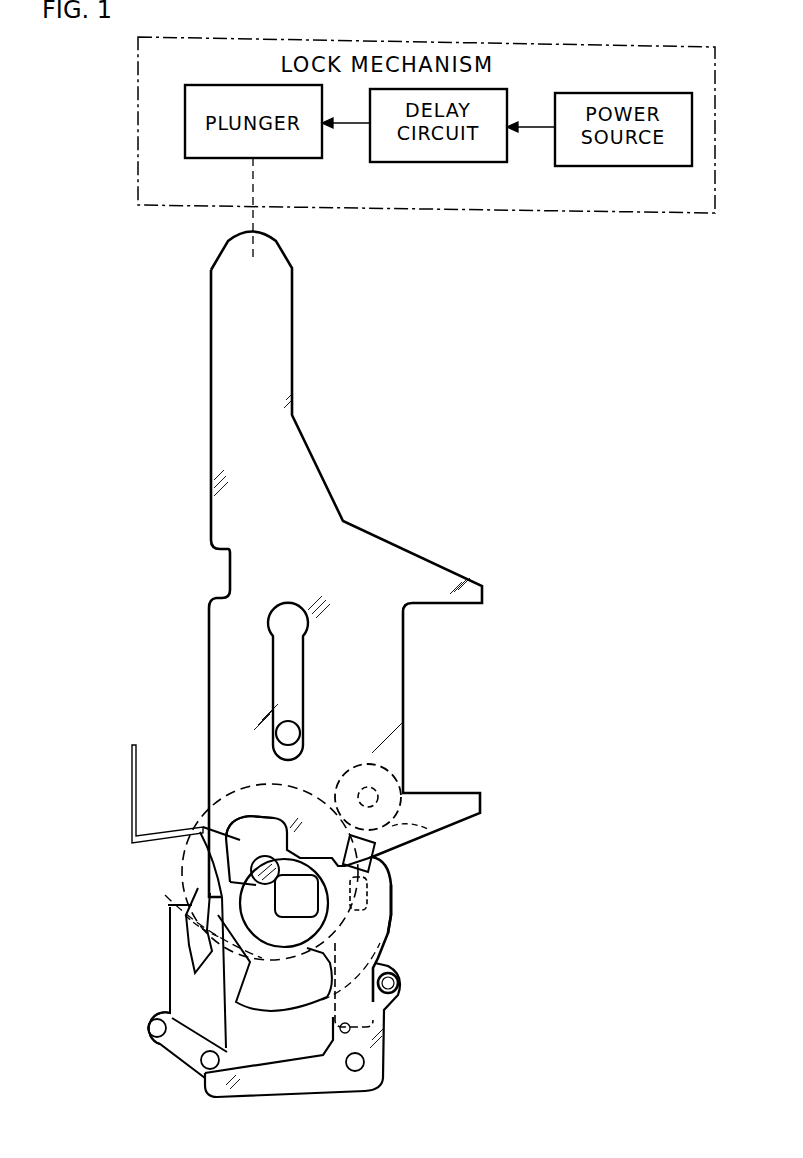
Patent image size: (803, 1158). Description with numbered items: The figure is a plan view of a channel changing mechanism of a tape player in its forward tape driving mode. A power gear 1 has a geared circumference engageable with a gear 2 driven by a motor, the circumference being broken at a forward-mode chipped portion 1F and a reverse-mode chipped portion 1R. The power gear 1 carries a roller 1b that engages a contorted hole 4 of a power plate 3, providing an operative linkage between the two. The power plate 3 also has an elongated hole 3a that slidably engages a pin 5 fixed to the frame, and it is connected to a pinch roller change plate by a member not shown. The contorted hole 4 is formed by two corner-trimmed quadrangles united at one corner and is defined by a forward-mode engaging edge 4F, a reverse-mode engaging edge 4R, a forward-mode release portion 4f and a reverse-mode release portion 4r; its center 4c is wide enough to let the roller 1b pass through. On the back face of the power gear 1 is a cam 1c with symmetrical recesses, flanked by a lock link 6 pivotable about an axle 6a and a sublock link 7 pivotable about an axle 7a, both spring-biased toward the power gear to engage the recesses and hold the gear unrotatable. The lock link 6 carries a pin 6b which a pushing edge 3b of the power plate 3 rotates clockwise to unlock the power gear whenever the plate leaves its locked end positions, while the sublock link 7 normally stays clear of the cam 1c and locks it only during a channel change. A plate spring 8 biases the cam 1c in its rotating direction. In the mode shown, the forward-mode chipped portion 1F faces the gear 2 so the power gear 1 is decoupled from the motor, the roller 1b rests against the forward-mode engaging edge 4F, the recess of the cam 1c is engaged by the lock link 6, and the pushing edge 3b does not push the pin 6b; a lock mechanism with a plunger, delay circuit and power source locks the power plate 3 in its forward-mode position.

The power gear 1 is at (190, 878).
The roller 1b is at (203, 830).
The cam 1c is at (360, 916).
The forward-mode chipped portion 1F is at (392, 826).
The reverse-mode chipped portion 1R is at (237, 973).
The gear 2 is at (378, 770).
The power plate 3 is at (301, 460).
The elongated hole 3a is at (296, 669).
The pushing edge 3b is at (386, 935).
The contorted hole 4 is at (410, 852).
The center 4c is at (352, 867).
The forward-mode release portion 4f is at (258, 818).
The forward-mode engaging edge 4F is at (210, 890).
The reverse-mode engaging edge 4R is at (305, 857).
The reverse-mode release portion 4r is at (376, 950).
The pin 5 is at (300, 740).
The lock link 6 is at (318, 1074).
The axle 6a is at (366, 1065).
The pin 6b is at (399, 982).
The sublock link 7 is at (176, 1053).
The axle 7a is at (198, 1064).
The plate spring 8 is at (128, 794).